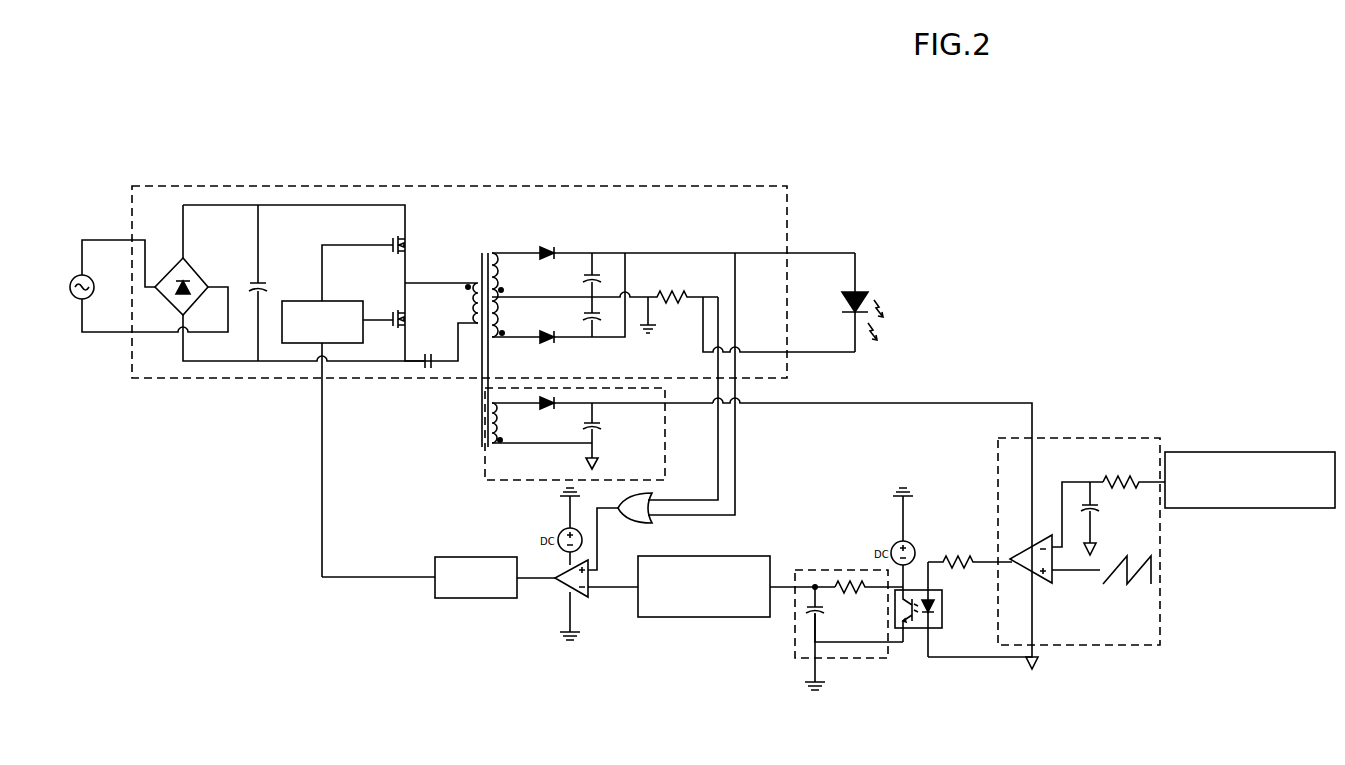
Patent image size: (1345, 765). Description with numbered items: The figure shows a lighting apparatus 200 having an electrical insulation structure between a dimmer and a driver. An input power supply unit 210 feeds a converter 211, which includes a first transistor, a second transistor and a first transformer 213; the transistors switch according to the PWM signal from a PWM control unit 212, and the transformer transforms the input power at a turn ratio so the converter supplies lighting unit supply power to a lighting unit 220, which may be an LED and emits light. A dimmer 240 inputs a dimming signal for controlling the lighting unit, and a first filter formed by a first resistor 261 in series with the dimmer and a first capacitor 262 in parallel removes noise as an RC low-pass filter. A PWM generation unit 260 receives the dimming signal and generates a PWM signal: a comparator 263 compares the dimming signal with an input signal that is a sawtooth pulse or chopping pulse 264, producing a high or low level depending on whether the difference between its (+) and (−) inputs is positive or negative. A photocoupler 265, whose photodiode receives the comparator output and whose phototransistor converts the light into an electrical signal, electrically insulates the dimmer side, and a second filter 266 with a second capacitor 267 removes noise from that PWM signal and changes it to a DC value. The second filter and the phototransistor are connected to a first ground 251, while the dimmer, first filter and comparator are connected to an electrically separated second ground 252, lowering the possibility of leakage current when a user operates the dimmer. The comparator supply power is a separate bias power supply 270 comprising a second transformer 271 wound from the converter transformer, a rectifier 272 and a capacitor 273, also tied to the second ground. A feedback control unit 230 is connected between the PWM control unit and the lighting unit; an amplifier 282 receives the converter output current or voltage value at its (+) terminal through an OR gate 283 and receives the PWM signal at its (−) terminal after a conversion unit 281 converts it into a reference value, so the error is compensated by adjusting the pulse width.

The lighting apparatus 200 is at (101, 183).
The input power supply unit 210 is at (73, 278).
The converter 211 is at (640, 186).
The PWM control unit 212 is at (298, 345).
The first transformer 213 is at (483, 252).
The lighting unit 220 is at (864, 292).
The feedback control unit 230 is at (473, 557).
The dimmer 240 is at (1269, 452).
The first ground 251 is at (572, 651).
The second ground 252 is at (600, 463).
The PWM generation unit 260 is at (1144, 517).
The first resistor 261 is at (1112, 476).
The first capacitor 262 is at (1100, 508).
The comparator 263 is at (1026, 567).
The sawtooth pulse or chopping pulse 264 is at (1256, 604).
The photocoupler 265 is at (912, 631).
The second filter 266 is at (833, 570).
The second capacitor 267 is at (826, 611).
The bias power supply 270 is at (569, 438).
The second transformer 271 is at (480, 426).
The rectifier 272 is at (538, 402).
The capacitor 273 is at (600, 426).
The conversion unit 281 is at (697, 620).
The amplifier 282 is at (565, 585).
The OR gate 283 is at (636, 522).